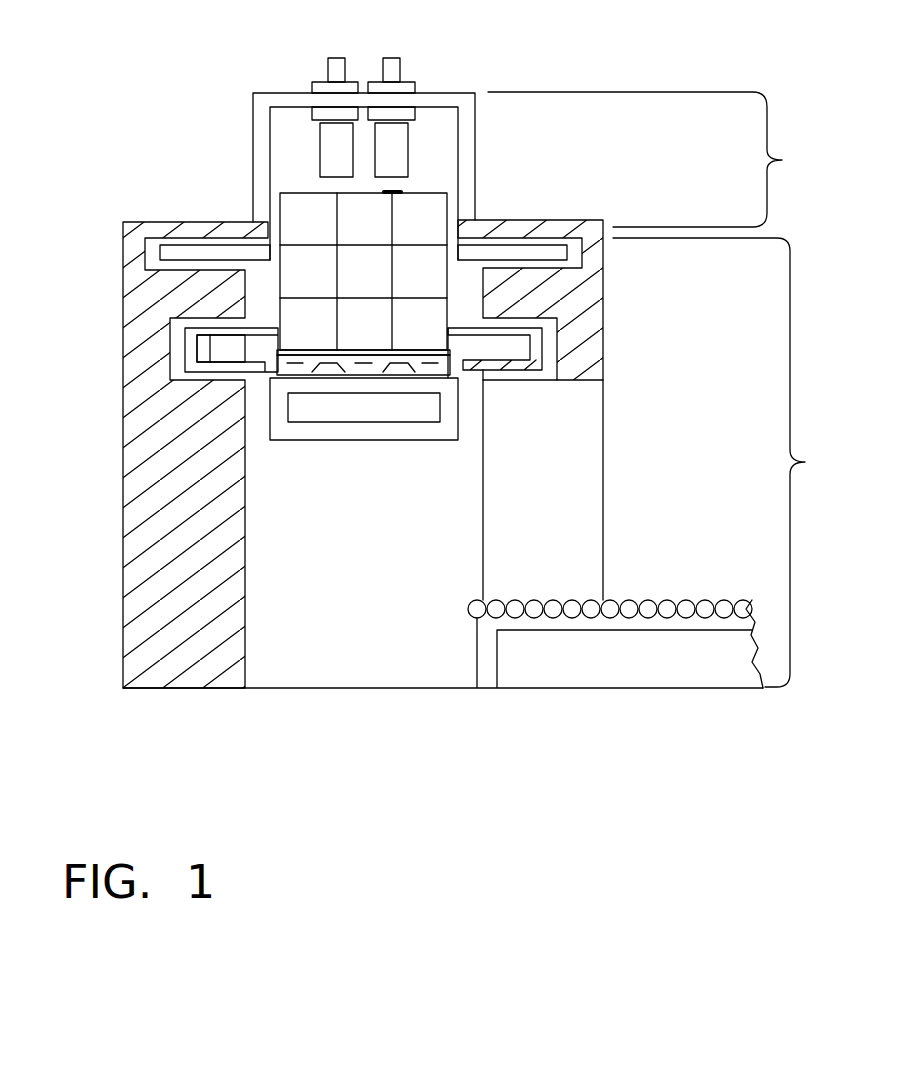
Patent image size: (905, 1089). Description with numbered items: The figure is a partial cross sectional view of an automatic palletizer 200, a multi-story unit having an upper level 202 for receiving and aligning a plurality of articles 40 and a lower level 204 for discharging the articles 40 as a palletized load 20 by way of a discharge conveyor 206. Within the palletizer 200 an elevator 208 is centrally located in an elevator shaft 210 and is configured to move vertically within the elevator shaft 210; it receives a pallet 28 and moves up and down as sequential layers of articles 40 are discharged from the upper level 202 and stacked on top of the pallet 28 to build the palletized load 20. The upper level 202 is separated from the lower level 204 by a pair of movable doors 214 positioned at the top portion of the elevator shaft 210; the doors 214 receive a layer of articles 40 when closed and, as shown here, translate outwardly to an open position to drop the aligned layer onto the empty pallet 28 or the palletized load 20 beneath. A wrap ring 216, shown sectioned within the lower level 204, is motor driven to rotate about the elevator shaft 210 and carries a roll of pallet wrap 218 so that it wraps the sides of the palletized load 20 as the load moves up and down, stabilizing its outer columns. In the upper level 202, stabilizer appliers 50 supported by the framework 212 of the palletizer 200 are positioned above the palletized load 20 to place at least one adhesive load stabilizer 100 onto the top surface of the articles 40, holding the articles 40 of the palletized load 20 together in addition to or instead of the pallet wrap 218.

The automatic palletizer 200 is at (215, 216).
The upper level 202 is at (782, 160).
The lower level 204 is at (805, 462).
The discharge conveyor 206 is at (685, 600).
The elevator 208 is at (440, 433).
The elevator shaft 210 is at (358, 648).
The framework 212 is at (290, 93).
The movable doors 214 is at (220, 253).
The wrap ring 216 is at (193, 352).
The pallet wrap 218 is at (223, 350).
The palletized load 20 is at (301, 180).
The pallet 28 is at (443, 373).
The articles 40 is at (412, 213).
The stabilizer appliers 50 is at (398, 155).
The adhesive load stabilizer 100 is at (400, 191).